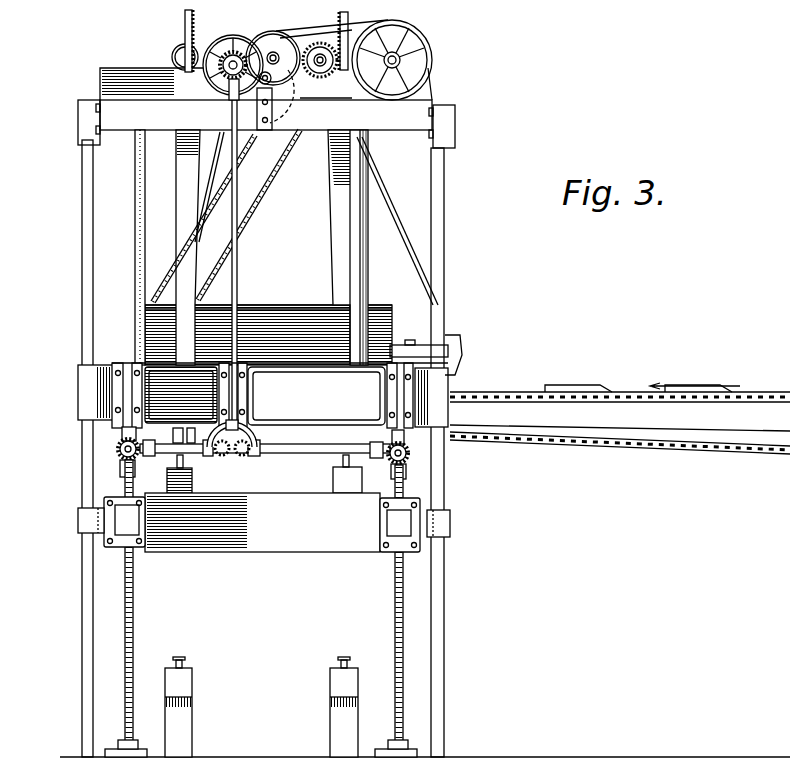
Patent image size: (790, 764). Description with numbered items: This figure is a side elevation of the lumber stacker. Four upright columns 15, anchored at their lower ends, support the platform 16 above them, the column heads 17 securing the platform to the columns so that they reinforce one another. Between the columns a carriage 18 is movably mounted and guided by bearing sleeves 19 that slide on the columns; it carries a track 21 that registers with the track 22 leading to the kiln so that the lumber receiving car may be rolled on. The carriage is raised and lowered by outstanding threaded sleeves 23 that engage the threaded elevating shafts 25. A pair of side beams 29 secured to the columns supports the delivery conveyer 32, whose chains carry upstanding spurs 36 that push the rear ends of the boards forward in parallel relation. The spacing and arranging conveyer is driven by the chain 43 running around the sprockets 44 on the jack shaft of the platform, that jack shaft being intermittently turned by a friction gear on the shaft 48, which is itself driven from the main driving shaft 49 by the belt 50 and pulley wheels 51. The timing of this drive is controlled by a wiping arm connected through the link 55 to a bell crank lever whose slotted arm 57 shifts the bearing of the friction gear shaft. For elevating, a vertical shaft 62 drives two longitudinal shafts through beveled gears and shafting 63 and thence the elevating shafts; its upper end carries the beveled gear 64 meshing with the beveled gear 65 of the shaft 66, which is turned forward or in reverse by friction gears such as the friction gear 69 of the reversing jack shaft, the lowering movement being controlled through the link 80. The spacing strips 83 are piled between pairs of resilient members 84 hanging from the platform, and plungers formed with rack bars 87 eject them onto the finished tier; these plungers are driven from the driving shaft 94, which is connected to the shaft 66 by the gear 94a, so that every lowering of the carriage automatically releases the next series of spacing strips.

The upright column 15 is at (82, 614).
The platform 16 is at (117, 107).
The column head 17 is at (80, 118).
The carriage 18 is at (303, 545).
The bearing sleeve 19 is at (78, 514).
The track 21 is at (167, 477).
The track 22 is at (185, 682).
The threaded sleeve 23 is at (104, 543).
The threaded elevating shaft 25 is at (134, 616).
The side beam 29 is at (316, 396).
The delivery conveyer 32 is at (630, 378).
The spur 36 is at (543, 448).
The chain 43 is at (258, 199).
The sprocket 44 is at (332, 60).
The shaft 48 is at (319, 62).
The main driving shaft 49 is at (403, 62).
The belt 50 is at (400, 13).
The pulley wheel 51 is at (437, 58).
The link 55 is at (415, 250).
The slotted arm 57 is at (281, 30).
The vertical shaft 62 is at (238, 253).
The beveled gears and shafting 63 is at (228, 456).
The beveled gear 64 is at (215, 50).
The beveled gear 65 is at (272, 37).
The shaft 66 is at (253, 60).
The friction gear 69 is at (177, 48).
The link 80 is at (213, 157).
The spacing strip 83 is at (287, 306).
The resilient member 84 is at (182, 196).
The rack bar 87 is at (184, 16).
The driving shaft 94 is at (247, 100).
The gear 94a is at (269, 99).